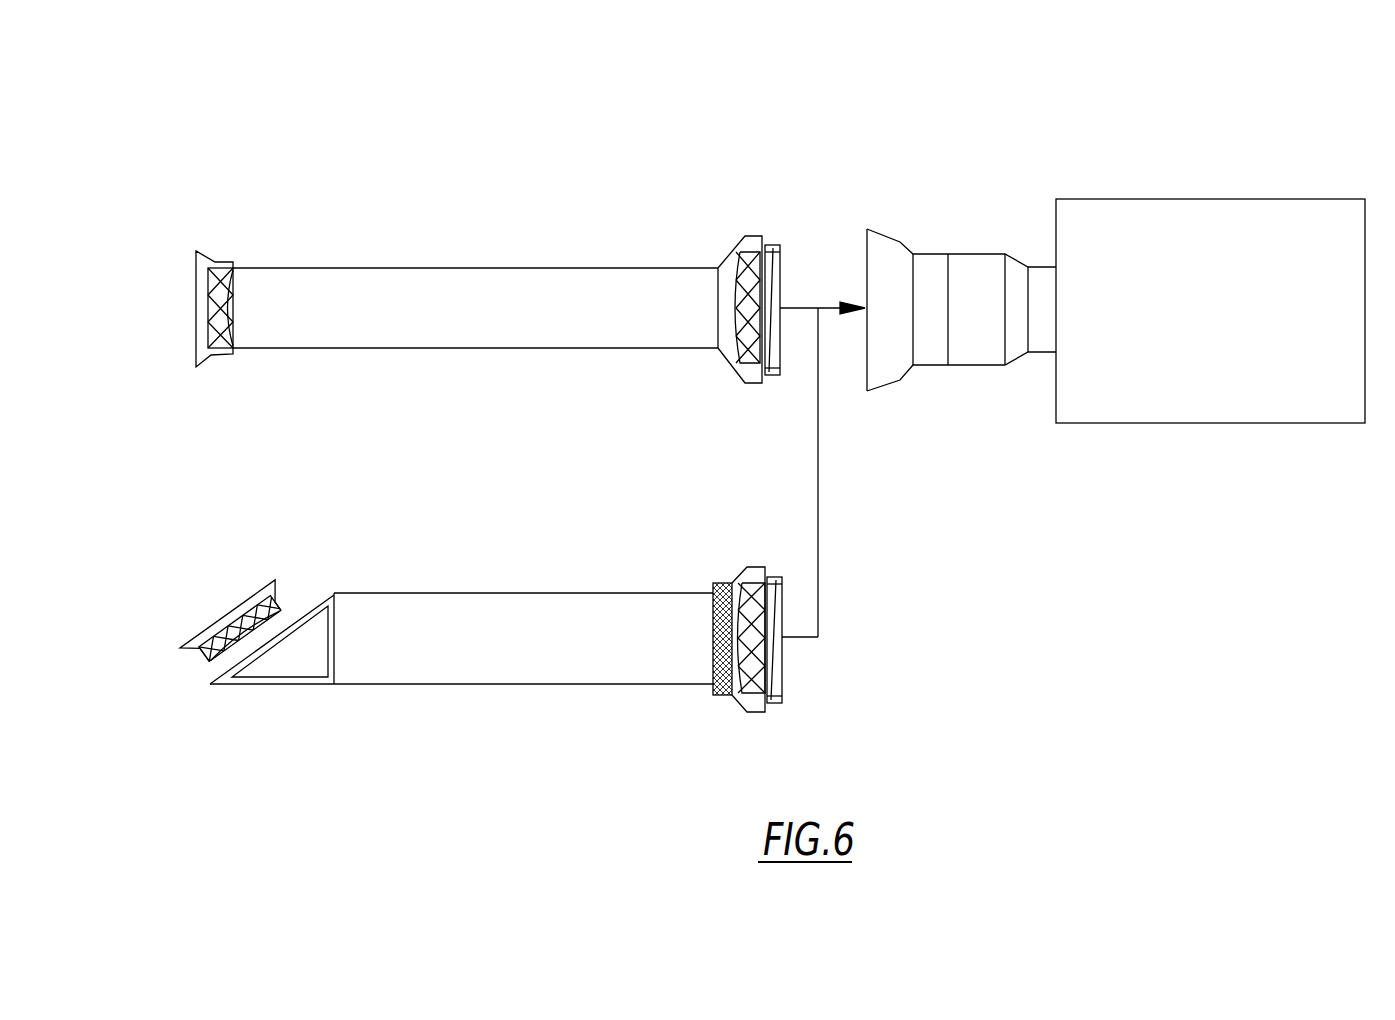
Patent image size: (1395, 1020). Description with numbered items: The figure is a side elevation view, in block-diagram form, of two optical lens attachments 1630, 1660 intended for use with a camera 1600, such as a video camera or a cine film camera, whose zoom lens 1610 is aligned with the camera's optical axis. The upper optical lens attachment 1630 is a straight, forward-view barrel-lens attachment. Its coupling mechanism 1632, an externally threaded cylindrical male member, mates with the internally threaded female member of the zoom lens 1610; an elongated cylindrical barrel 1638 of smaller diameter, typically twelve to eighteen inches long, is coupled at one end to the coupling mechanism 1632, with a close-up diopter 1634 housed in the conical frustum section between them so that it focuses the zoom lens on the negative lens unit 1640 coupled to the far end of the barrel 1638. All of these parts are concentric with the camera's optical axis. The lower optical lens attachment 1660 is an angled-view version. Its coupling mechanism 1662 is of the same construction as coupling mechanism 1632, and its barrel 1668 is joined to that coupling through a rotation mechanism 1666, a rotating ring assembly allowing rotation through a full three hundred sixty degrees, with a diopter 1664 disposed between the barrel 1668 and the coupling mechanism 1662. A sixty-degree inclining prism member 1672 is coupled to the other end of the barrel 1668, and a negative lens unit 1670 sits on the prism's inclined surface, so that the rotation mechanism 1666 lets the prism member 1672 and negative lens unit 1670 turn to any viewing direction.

The camera 1600 is at (1219, 192).
The zoom lens 1610 is at (943, 238).
The optical lens attachment 1630 is at (402, 254).
The coupling mechanism 1632 is at (775, 250).
The diopter 1634 is at (745, 272).
The barrel 1638 is at (570, 295).
The negative lens unit 1640 is at (233, 268).
The optical lens attachment 1660 is at (515, 578).
The coupling mechanism 1662 is at (780, 577).
The diopter 1664 is at (732, 696).
The rotation mechanism 1666 is at (718, 583).
The barrel 1668 is at (590, 668).
The negative lens unit 1670 is at (202, 660).
The inclining prism member 1672 is at (305, 640).